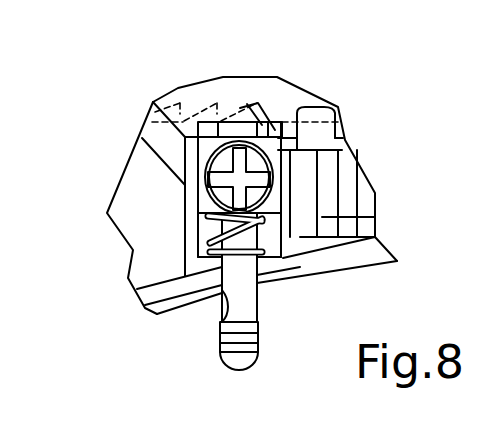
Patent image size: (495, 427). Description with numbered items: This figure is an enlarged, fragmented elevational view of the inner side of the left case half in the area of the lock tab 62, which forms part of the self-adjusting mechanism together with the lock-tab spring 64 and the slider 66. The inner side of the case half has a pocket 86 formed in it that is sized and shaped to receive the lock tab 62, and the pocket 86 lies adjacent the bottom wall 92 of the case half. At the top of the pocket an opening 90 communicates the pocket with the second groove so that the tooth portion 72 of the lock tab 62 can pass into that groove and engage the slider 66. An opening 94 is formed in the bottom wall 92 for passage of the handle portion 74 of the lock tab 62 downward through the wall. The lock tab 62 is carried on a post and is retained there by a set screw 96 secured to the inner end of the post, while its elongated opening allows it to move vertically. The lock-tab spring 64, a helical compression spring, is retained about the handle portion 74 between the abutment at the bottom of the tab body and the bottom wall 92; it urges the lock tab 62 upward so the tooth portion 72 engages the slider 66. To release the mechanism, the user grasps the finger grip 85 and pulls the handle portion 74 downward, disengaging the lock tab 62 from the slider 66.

The lock tab 62 is at (208, 350).
The lock-tab spring 64 is at (243, 258).
The slider 66 is at (318, 127).
The tooth portion 72 is at (272, 127).
The handle portion 74 is at (240, 371).
The finger grip 85 is at (257, 348).
The pocket 86 is at (287, 225).
The opening 90 is at (273, 125).
The bottom wall 92 is at (157, 314).
The opening 94 is at (222, 322).
The set screw 96 is at (205, 186).